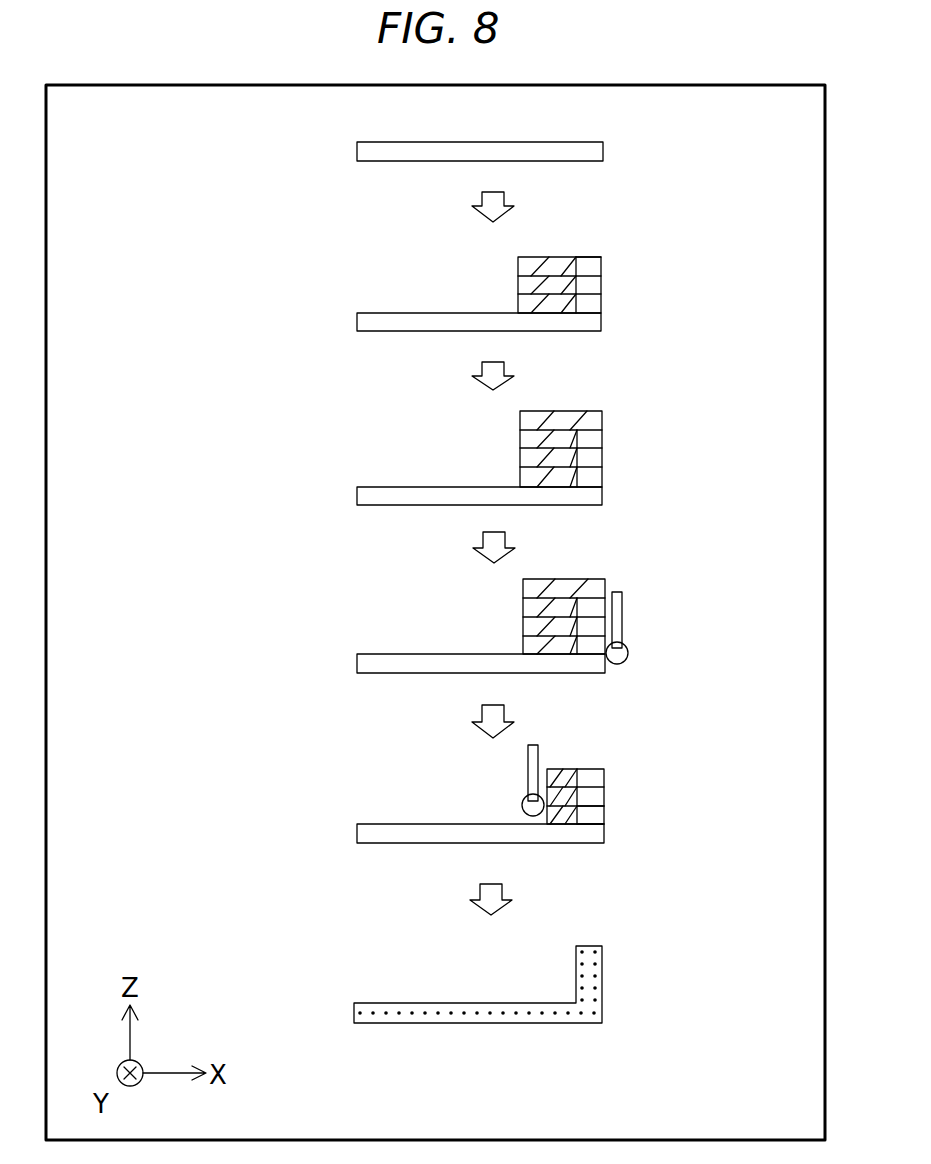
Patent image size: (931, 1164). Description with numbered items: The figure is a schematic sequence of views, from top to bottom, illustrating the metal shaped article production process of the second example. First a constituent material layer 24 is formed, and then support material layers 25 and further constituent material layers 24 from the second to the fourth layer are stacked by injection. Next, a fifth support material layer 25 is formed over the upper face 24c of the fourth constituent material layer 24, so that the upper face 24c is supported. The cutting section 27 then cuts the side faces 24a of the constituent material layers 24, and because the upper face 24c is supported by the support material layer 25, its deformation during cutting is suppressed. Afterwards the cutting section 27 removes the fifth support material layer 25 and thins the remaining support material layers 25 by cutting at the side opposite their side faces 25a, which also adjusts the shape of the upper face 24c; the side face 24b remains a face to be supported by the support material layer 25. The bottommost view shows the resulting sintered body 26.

The constituent material layer 24 is at (390, 150).
The support material layer 25 is at (560, 263).
The upper face 24c is at (623, 243).
The side face 24a is at (608, 612).
The cutting section 27 is at (628, 654).
The side face 24b is at (578, 808).
The side face 25a is at (588, 825).
The sintered body 26 is at (616, 936).